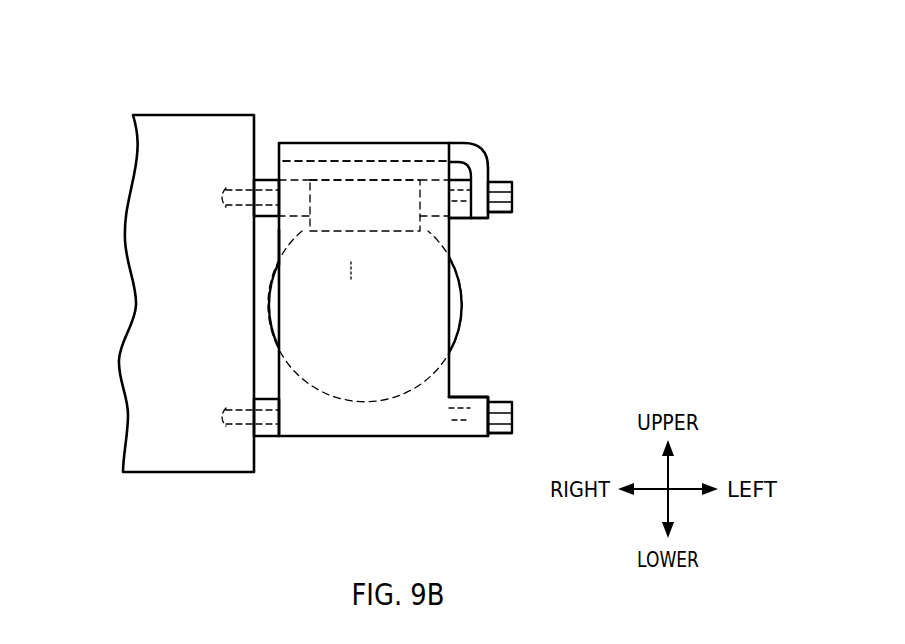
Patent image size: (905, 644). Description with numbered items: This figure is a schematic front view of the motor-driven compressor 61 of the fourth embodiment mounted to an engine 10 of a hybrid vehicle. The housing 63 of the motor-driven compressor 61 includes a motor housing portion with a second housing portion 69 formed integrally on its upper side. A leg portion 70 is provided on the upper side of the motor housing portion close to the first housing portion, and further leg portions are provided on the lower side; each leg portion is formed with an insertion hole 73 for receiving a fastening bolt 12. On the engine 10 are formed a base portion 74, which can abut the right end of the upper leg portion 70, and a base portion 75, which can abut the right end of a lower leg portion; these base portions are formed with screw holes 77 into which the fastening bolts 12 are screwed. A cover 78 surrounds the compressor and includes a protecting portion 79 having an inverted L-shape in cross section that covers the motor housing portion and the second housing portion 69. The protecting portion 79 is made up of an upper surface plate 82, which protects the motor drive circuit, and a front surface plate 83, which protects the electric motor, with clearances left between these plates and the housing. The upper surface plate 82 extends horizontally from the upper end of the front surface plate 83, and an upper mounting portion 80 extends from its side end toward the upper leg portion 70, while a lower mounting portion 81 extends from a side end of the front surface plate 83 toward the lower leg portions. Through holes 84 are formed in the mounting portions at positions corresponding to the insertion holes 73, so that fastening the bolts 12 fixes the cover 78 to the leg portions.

The engine 10 is at (172, 114).
The fastening bolt 12 is at (500, 182).
The motor-driven compressor 61 is at (597, 157).
The housing 63 is at (268, 320).
The second housing portion 69 is at (421, 180).
The leg portion 70 is at (466, 143).
The insertion hole 73 is at (463, 220).
The base portion 74 is at (266, 180).
The base portion 75 is at (272, 440).
The screw hole 77 is at (240, 205).
The cover 78 is at (279, 247).
The protecting portion 79 is at (377, 66).
The upper mounting portion 80 is at (478, 220).
The lower mounting portion 81 is at (480, 397).
The upper surface plate 82 is at (372, 143).
The front surface plate 83 is at (351, 262).
The through hole 84 is at (512, 213).